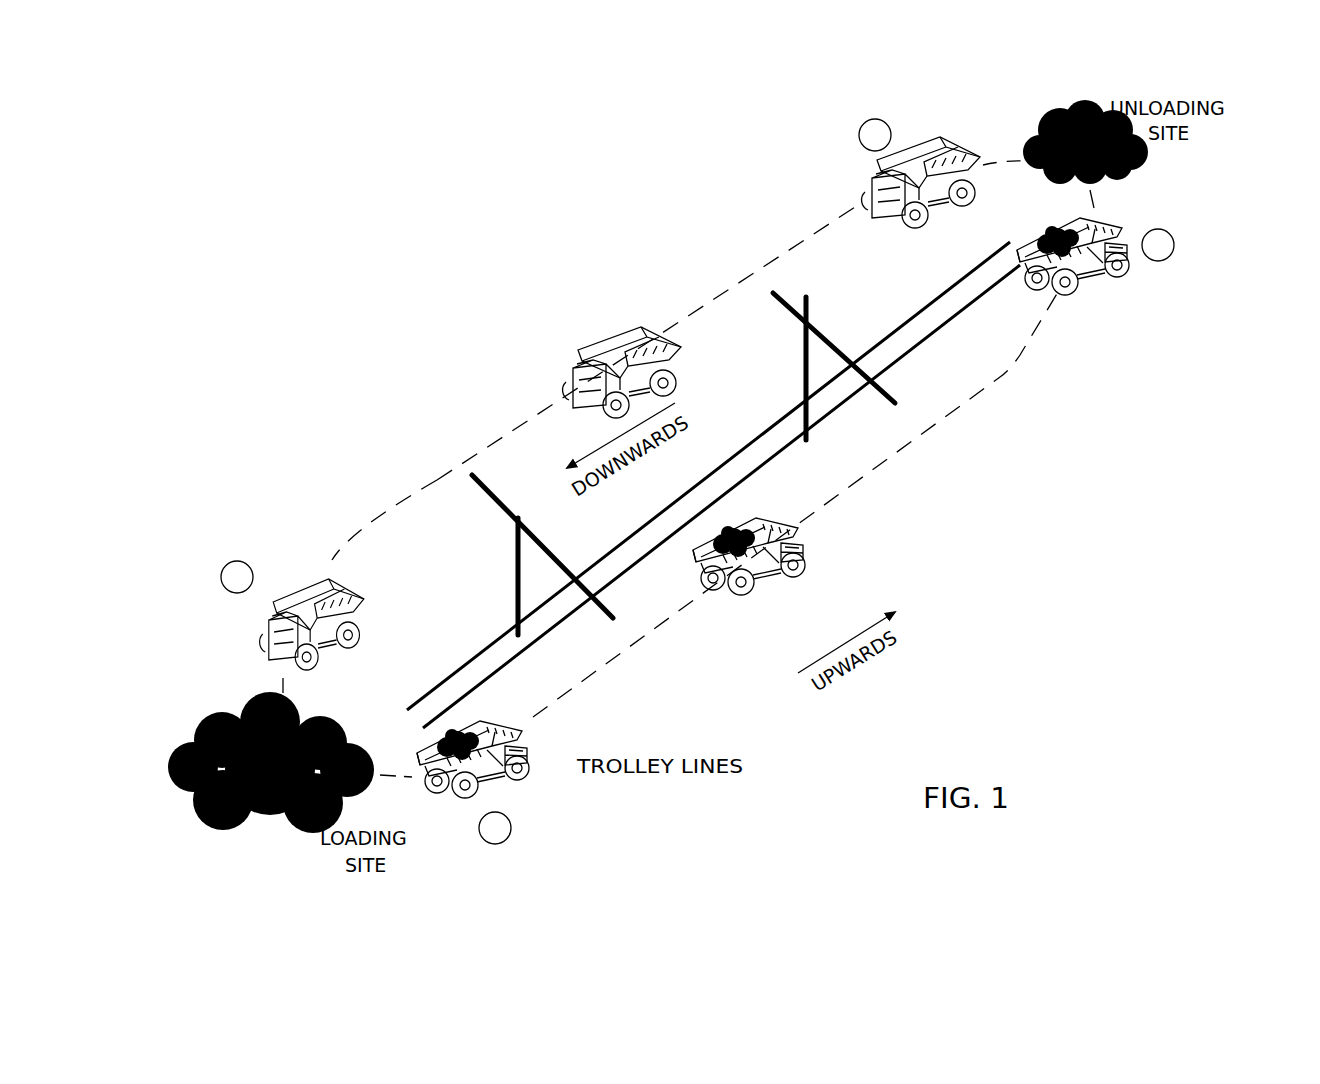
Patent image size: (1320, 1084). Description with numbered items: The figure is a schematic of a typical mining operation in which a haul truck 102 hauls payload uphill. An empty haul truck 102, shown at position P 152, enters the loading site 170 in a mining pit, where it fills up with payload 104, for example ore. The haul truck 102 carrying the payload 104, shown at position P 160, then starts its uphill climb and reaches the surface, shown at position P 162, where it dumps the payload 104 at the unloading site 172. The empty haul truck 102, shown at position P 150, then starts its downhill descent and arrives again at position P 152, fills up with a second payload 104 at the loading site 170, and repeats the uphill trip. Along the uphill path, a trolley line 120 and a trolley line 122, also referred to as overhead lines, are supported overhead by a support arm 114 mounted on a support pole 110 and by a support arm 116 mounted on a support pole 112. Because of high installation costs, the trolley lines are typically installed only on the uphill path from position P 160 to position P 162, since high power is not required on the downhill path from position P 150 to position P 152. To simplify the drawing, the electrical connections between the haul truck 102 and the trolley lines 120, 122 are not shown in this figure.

The haul truck 102 is at (933, 207).
The payload 104 is at (1053, 228).
The support pole 110 is at (517, 572).
The support pole 112 is at (805, 362).
The support arm 114 is at (500, 500).
The support arm 116 is at (775, 296).
The trolley line 120 is at (535, 647).
The trolley line 122 is at (562, 597).
The position P 150 is at (854, 135).
The position P 152 is at (217, 577).
The position P 160 is at (518, 828).
The position P 162 is at (1179, 245).
The loading site 170 is at (271, 775).
The unloading site 172 is at (1085, 134).